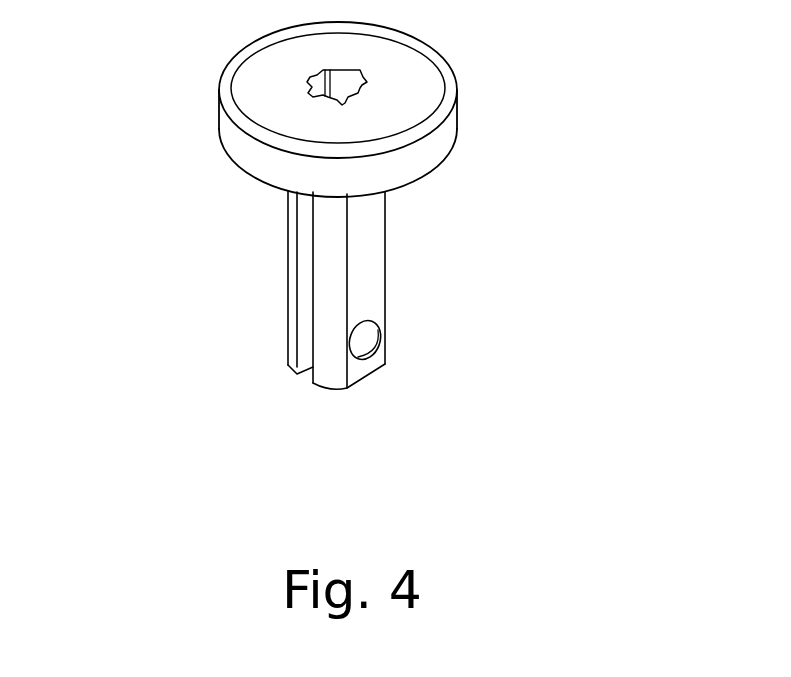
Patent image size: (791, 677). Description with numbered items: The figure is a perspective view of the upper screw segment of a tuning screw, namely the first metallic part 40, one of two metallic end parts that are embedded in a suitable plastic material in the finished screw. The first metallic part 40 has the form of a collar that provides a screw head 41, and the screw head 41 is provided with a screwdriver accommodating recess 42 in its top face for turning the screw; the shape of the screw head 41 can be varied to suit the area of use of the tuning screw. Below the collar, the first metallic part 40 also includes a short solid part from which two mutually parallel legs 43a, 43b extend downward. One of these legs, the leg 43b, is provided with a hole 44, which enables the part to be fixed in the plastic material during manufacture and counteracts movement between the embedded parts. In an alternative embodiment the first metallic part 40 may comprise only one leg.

The first metallic part 40 is at (58, 103).
The screw head 41 is at (400, 60).
The screwdriver accommodating recess 42 is at (316, 68).
The leg 43a is at (289, 376).
The leg 43b is at (337, 392).
The hole 44 is at (381, 338).